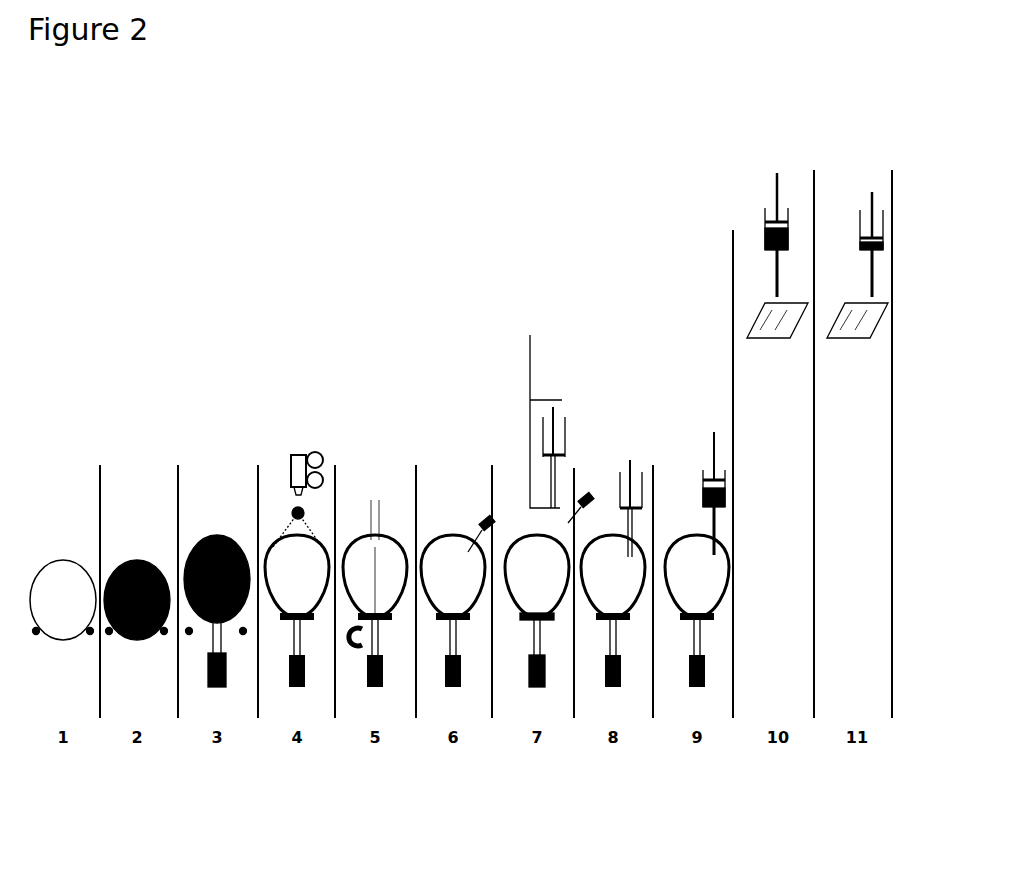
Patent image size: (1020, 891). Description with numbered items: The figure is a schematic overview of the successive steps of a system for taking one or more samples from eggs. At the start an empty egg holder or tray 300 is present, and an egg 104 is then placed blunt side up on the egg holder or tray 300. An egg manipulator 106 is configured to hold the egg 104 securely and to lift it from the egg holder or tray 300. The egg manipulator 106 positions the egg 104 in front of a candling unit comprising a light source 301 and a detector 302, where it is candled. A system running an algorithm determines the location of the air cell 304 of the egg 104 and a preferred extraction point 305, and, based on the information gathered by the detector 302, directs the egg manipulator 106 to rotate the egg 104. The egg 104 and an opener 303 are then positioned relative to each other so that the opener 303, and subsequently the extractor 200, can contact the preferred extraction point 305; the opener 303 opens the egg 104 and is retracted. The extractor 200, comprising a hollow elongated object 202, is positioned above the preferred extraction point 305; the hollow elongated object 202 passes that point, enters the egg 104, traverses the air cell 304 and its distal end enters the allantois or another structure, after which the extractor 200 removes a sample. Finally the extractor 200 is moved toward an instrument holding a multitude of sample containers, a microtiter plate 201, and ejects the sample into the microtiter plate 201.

The egg 104 is at (137, 570).
The egg manipulator 106 is at (233, 608).
The egg holder or tray 300 is at (163, 632).
The light source 301 is at (295, 507).
The detector 302 is at (297, 453).
The opener 303 is at (483, 548).
The air cell 304 is at (375, 547).
The preferred extraction point 305 is at (555, 543).
The extractor 200 is at (536, 417).
The microtiter plate 201 is at (778, 323).
The hollow elongated object 202 is at (552, 482).